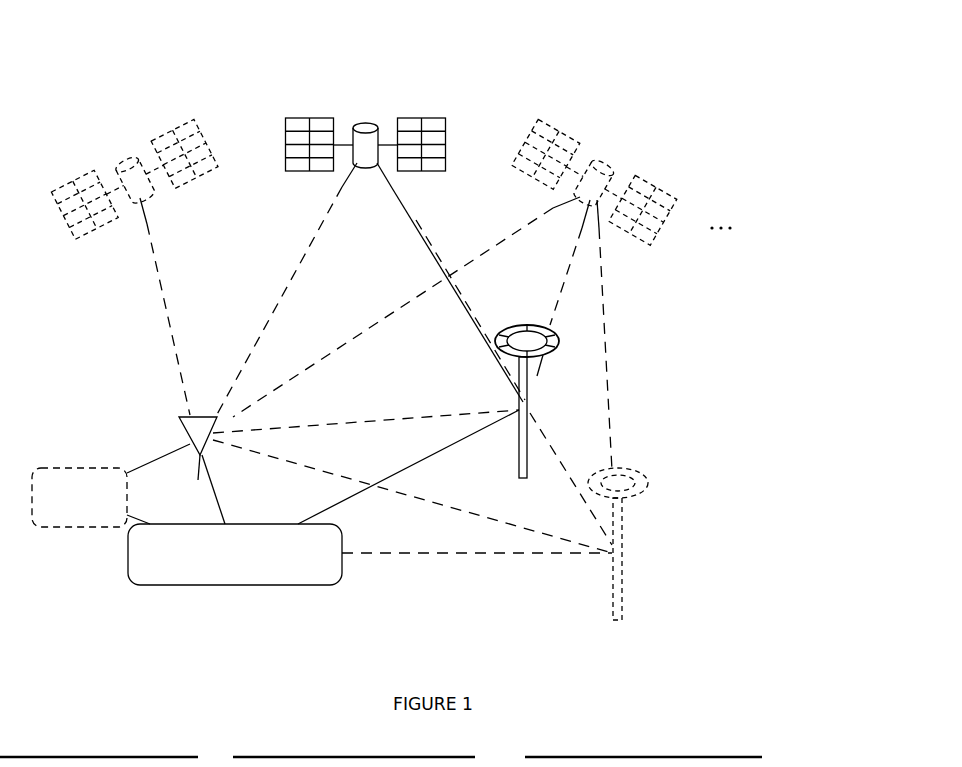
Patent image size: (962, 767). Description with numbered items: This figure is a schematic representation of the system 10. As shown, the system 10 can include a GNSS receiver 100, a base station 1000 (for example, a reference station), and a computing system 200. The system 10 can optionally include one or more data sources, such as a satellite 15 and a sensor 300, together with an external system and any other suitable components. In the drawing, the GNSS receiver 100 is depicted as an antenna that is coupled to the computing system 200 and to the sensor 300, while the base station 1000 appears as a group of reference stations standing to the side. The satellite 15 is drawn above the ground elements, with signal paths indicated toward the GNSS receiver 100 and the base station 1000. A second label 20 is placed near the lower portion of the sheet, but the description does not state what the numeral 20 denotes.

The system 10 is at (748, 94).
The satellite 15 is at (366, 139).
The ground segment 20 is at (740, 684).
The GNSS receiver 100 is at (164, 448).
The computing system 200 is at (251, 568).
The sensor 300 is at (63, 511).
The base station 1000 is at (609, 472).